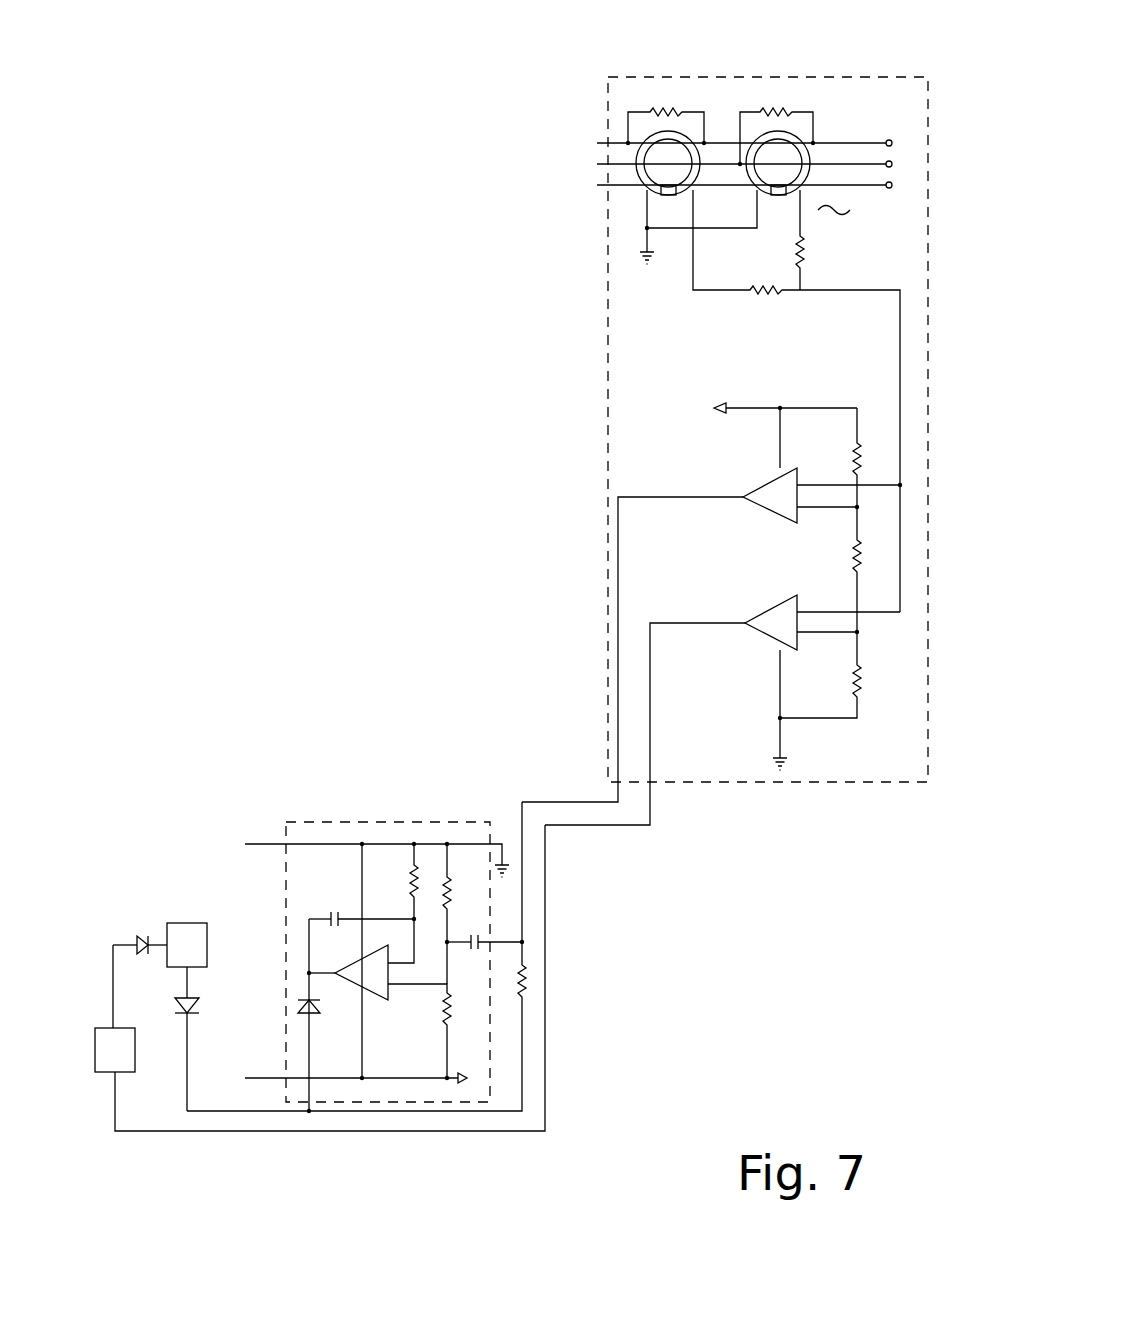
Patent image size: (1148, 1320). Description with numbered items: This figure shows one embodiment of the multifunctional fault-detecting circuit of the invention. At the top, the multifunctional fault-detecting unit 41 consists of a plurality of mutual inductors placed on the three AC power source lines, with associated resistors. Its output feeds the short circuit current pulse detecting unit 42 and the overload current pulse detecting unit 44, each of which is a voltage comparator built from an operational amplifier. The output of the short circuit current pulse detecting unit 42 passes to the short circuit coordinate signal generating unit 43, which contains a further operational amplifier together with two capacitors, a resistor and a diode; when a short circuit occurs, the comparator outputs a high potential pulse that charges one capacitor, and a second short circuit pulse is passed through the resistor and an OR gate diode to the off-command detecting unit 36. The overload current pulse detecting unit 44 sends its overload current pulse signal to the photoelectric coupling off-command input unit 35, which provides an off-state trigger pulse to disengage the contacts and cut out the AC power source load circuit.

The photoelectric coupling off-command input unit 35 is at (102, 1065).
The off-command detecting unit 36 is at (183, 927).
The multifunctional fault-detecting unit 41 is at (845, 87).
The short circuit current pulse detecting unit 42 is at (788, 417).
The short circuit coordinate signal generating unit 43 is at (428, 830).
The overload current pulse detecting unit 44 is at (863, 755).